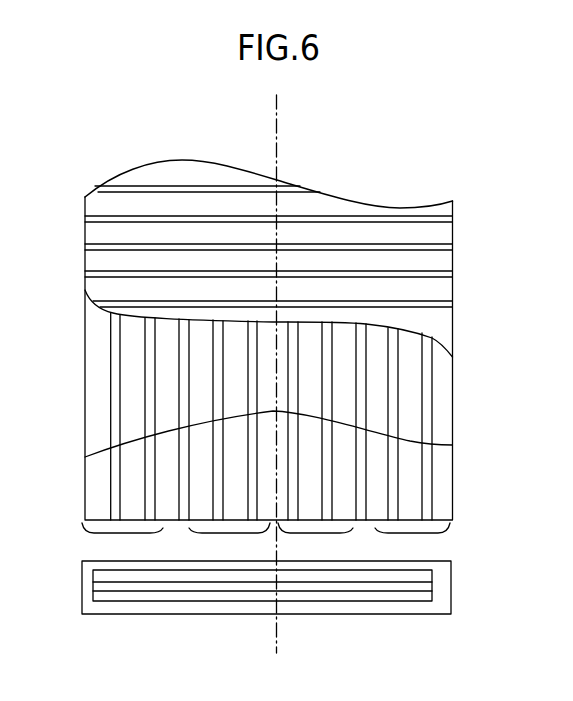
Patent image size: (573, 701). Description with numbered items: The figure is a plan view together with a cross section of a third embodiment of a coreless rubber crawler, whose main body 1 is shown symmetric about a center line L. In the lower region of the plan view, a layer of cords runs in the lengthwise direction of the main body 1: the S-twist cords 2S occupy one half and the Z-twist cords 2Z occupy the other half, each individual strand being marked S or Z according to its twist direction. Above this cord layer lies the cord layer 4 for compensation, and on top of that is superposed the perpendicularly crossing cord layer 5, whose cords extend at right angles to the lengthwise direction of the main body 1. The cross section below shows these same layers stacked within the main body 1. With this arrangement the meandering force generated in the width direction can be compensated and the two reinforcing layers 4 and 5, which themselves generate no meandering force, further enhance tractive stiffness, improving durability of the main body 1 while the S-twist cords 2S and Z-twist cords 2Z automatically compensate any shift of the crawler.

The main body 1 is at (443, 595).
The cord layer for compensation 4 is at (295, 481).
The perpendicularly crossing cord layer 5 is at (445, 263).
The S-twisted cord S is at (115, 377).
The Z-twisted cord Z is at (150, 377).
The S-twist cords 2S is at (127, 595).
The Z-twist cords 2Z is at (352, 598).
The center line L is at (277, 137).